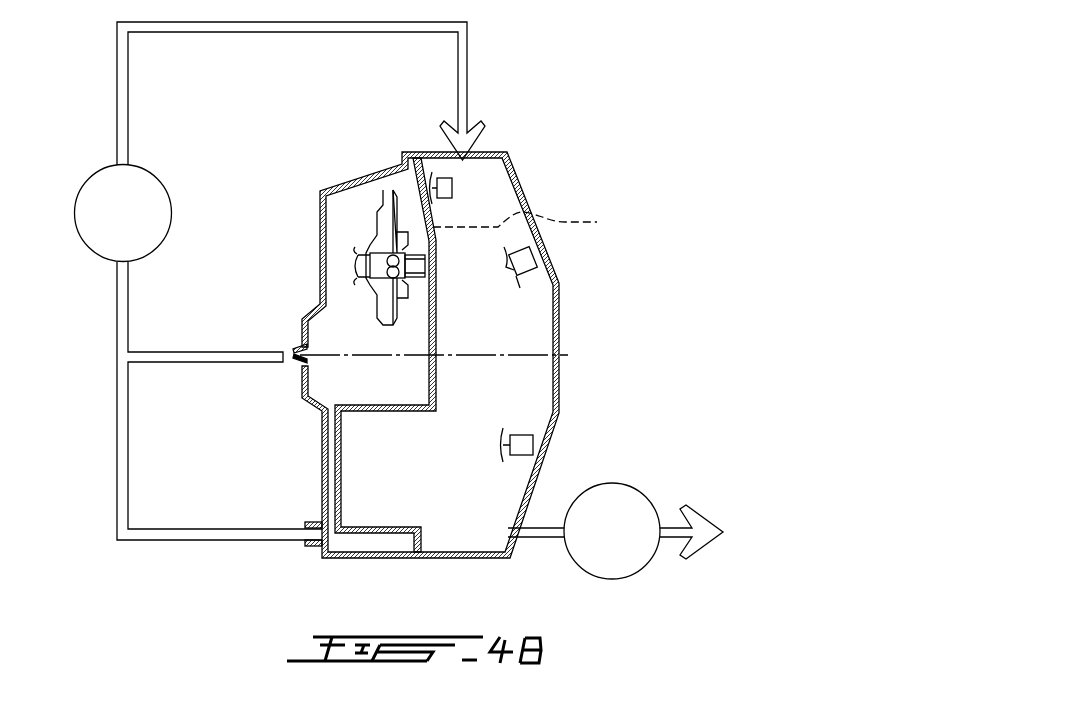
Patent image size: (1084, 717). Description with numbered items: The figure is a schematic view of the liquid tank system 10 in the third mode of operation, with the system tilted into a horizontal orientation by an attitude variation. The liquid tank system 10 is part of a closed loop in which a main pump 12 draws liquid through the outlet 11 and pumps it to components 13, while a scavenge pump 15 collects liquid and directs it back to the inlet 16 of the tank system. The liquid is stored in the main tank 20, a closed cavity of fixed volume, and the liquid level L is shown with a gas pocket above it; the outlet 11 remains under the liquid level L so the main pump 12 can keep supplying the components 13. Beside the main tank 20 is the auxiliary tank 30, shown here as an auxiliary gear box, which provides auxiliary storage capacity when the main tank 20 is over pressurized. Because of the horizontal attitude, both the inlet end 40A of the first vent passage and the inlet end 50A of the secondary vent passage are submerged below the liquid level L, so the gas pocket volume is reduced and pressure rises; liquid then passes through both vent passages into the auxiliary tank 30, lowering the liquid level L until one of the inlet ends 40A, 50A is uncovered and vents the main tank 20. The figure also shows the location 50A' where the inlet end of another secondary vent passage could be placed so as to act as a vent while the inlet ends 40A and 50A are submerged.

The liquid tank system 10 is at (727, 175).
The outlet 11 is at (538, 538).
The main pump 12 is at (624, 547).
The components 13 is at (708, 532).
The scavenge pump 15 is at (137, 226).
The inlet 16 is at (470, 103).
The main tank 20 is at (492, 185).
The auxiliary tank 30 is at (350, 347).
The inlet end of first vent passage 40A is at (530, 272).
The inlet end of secondary vent passage 50A is at (579, 439).
The inlet end of another secondary vent passage 50A' is at (400, 142).
The liquid level L is at (522, 226).